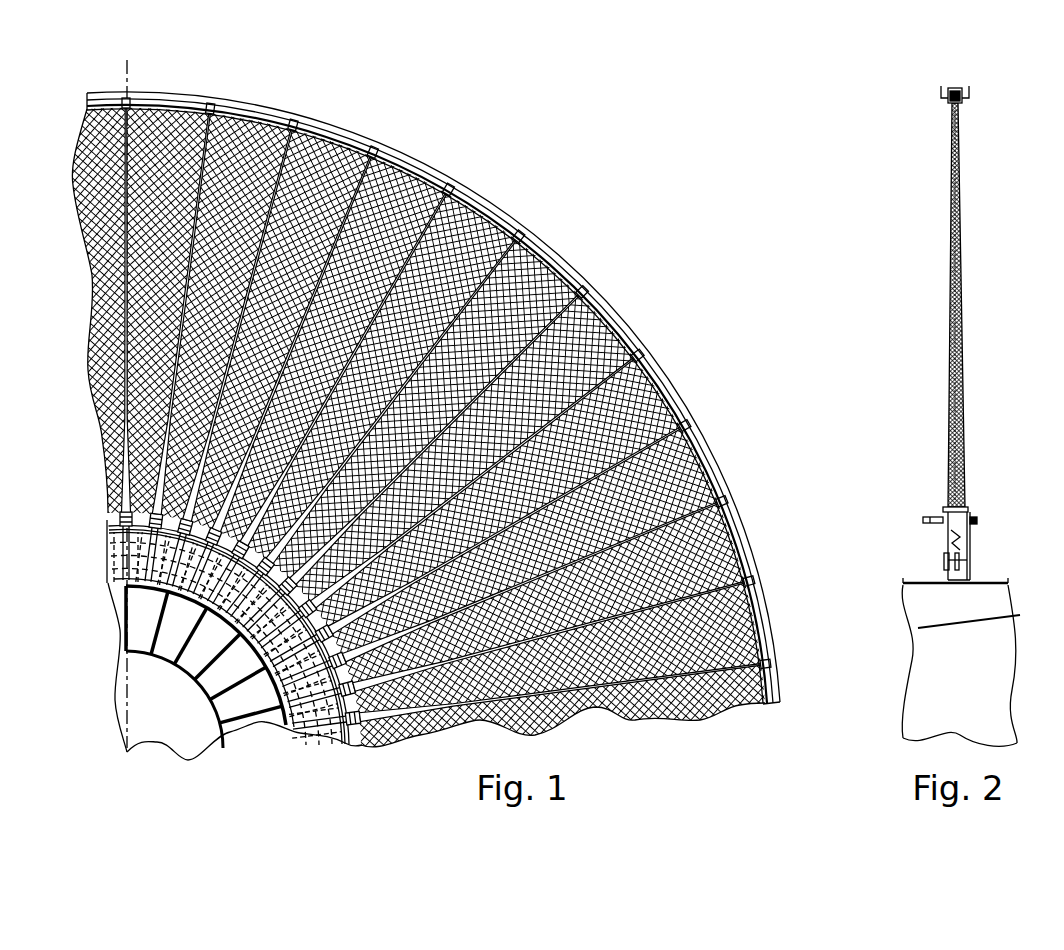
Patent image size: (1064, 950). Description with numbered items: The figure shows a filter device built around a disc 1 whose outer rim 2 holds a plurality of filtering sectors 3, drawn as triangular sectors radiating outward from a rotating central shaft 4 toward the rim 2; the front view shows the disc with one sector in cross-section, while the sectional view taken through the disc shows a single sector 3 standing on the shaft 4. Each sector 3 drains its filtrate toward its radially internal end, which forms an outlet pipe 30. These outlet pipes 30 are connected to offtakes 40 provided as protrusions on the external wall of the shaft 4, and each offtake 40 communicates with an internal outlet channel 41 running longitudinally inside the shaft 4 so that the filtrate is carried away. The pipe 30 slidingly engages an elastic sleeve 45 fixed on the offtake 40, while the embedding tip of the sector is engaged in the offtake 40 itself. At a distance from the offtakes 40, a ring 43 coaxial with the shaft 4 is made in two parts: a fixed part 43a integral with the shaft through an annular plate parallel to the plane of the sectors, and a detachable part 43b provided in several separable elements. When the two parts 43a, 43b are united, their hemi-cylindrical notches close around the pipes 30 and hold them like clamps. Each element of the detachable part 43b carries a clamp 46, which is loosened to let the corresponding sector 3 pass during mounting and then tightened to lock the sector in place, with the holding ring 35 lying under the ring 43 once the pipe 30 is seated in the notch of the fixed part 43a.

In FIG. 1, the disc 1 is at (431, 415).
In FIG. 1, the rim 2 is at (556, 251).
In FIG. 2, the rim 2 is at (970, 90).
In FIG. 1, the filtering sector 3 is at (680, 400).
In FIG. 2, the filtering sector 3 is at (953, 177).
In FIG. 1, the rotating central shaft 4 is at (218, 704).
In FIG. 2, the rotating central shaft 4 is at (932, 585).
In FIG. 1, the outlet pipe 30 is at (322, 735).
In FIG. 2, the outlet pipe 30 is at (972, 575).
In FIG. 2, the holding ring 35 is at (972, 538).
In FIG. 1, the offtake 40 is at (200, 604).
In FIG. 2, the offtake 40 is at (947, 577).
In FIG. 1, the internal outlet channel 41 is at (243, 710).
In FIG. 2, the internal outlet channel 41 is at (967, 614).
In FIG. 1, the ring 43 is at (355, 745).
In FIG. 2, the fixed part of the ring 43a is at (976, 512).
In FIG. 2, the detachable part of the ring 43b is at (940, 512).
In FIG. 1, the elastic sleeve 45 is at (110, 578).
In FIG. 2, the elastic sleeve 45 is at (945, 546).
In FIG. 1, the clamp 46 is at (270, 604).